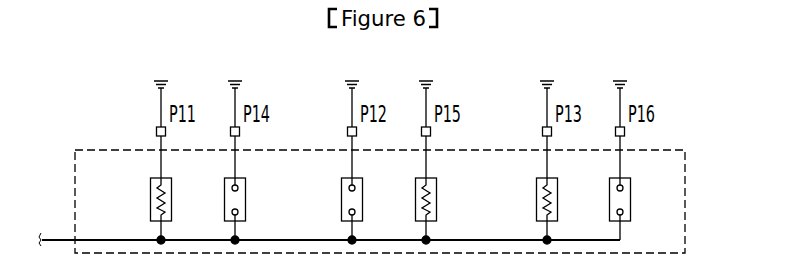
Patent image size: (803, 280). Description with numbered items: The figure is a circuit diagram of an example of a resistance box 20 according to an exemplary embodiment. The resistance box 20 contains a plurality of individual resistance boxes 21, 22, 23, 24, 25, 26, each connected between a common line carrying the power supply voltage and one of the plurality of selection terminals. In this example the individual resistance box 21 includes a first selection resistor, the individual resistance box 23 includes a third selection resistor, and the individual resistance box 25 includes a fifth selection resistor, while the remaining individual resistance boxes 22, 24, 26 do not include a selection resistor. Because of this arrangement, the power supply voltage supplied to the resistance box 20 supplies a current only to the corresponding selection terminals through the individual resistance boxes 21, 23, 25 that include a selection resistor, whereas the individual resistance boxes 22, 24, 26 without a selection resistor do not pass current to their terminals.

The resistance box 20 is at (685, 165).
The individual resistance box 21 is at (172, 204).
The individual resistance box 22 is at (363, 204).
The individual resistance box 23 is at (558, 204).
The individual resistance box 24 is at (246, 204).
The individual resistance box 25 is at (437, 204).
The individual resistance box 26 is at (631, 204).